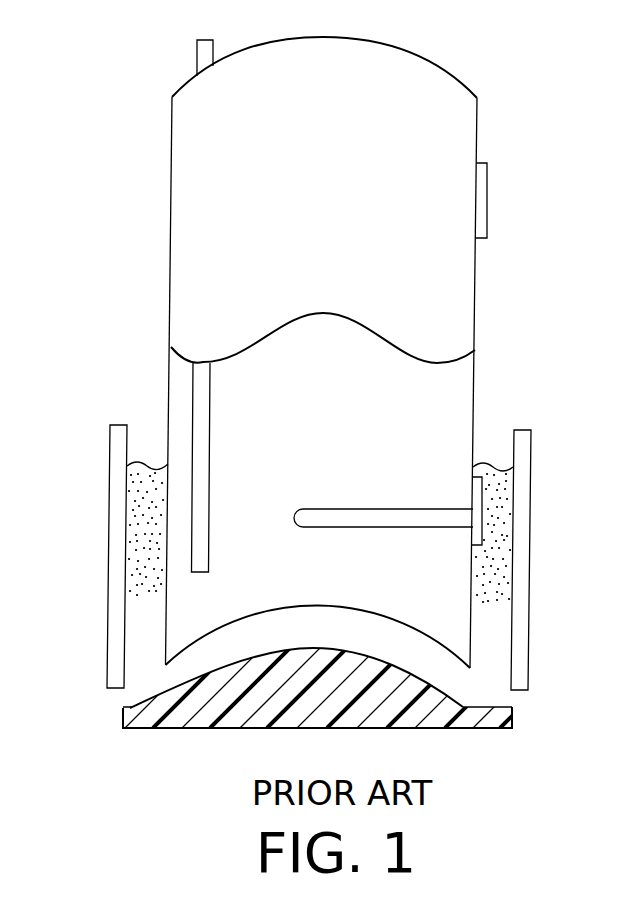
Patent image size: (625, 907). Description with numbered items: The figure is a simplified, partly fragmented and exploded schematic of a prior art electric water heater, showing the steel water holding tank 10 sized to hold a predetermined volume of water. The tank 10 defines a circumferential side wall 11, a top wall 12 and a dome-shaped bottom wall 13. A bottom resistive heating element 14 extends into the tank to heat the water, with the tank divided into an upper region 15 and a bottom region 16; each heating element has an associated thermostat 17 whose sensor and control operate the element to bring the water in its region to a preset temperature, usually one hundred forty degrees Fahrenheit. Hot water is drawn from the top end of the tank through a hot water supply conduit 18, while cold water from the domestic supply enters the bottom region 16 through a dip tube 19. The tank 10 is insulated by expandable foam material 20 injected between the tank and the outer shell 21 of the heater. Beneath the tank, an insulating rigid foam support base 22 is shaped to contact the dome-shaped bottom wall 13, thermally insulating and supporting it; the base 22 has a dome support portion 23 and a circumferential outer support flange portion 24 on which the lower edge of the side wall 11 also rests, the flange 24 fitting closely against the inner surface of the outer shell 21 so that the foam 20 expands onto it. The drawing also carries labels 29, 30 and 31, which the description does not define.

The water holding tank 10 is at (194, 240).
The circumferential side wall 11 is at (450, 314).
The top wall 12 is at (388, 48).
The dome-shaped bottom wall 13 is at (300, 607).
The bottom resistive heating element 14 is at (356, 509).
The upper region 15 is at (312, 192).
The bottom region 16 is at (302, 467).
The thermostat 17 is at (483, 193).
The hot water supply conduit 18 is at (215, 57).
The dip tube 19 is at (191, 432).
The expandable foam material 20 is at (495, 542).
The outer shell 21 is at (110, 486).
The insulating rigid foam support base 22 is at (182, 708).
The dome support portion 23 is at (280, 710).
The circumferential outer support flange portion 24 is at (153, 707).
The upper surface of crucible bottom 29 is at (372, 612).
The lower boundary of packing 30 is at (177, 627).
The gap between walls 31 is at (141, 645).